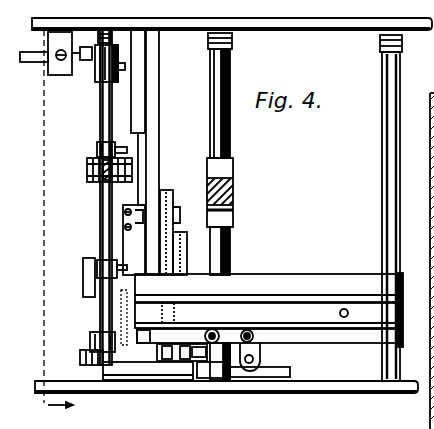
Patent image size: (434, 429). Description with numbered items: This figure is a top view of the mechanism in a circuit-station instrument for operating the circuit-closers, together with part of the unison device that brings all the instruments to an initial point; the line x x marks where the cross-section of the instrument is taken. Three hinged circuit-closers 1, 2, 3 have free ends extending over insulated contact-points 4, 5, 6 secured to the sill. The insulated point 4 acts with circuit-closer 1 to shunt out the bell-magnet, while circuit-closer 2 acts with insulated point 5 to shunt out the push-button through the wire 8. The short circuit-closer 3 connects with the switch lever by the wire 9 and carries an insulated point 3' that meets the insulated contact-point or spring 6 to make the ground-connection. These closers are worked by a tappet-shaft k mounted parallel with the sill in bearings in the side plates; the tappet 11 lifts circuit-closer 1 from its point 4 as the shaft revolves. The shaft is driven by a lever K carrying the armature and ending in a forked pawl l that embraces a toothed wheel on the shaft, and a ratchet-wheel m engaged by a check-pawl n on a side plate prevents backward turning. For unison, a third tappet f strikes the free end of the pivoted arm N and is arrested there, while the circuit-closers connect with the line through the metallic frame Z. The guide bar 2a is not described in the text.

The metallic frame Z is at (232, 216).
The section line x is at (54, 210).
The pivoted arm N is at (43, 57).
The third tappet f is at (82, 66).
The tappet-shaft k is at (103, 197).
The forked or segmental pawl l is at (97, 150).
The wire 8 is at (125, 151).
The driving-lever K is at (99, 170).
The guide bar 2a is at (146, 152).
The insulated contact-point 4 is at (181, 275).
The insulated contact-point 5 is at (168, 312).
The insulated point 3' is at (143, 336).
The circuit-closer 1 is at (266, 288).
The circuit-closer 2 is at (266, 315).
The circuit-closer 3 is at (269, 337).
The wire 9 is at (253, 359).
The tappet 11 is at (98, 277).
The insulated contact-point or spring 6 is at (100, 321).
The ratchet-wheel m is at (80, 358).
The check-pawl n is at (160, 372).